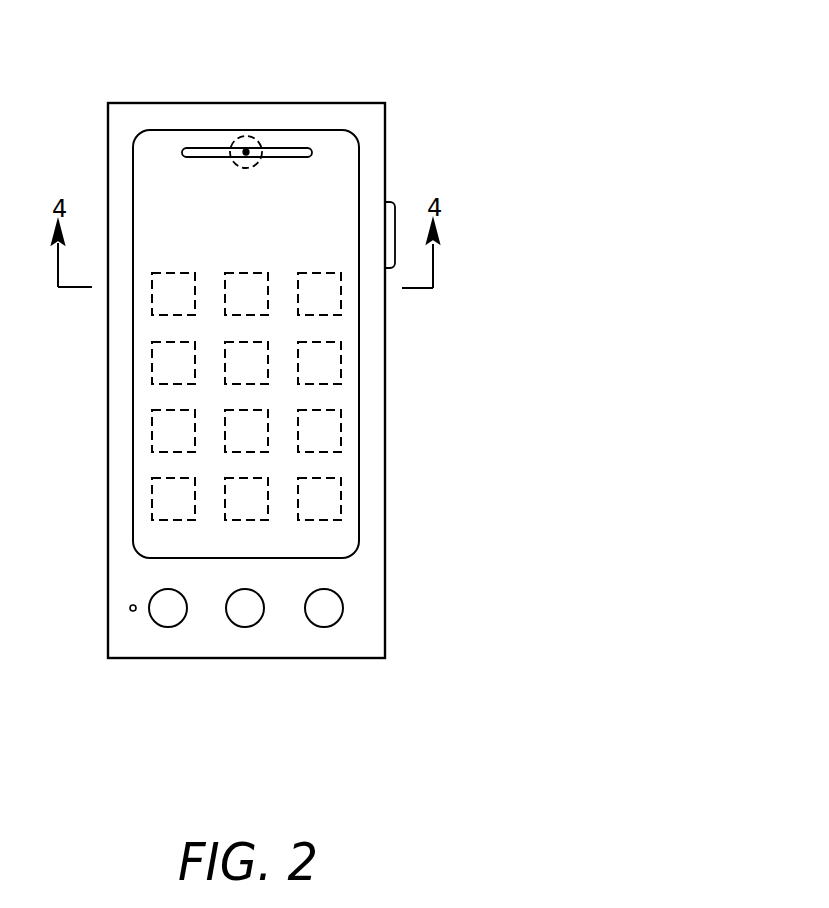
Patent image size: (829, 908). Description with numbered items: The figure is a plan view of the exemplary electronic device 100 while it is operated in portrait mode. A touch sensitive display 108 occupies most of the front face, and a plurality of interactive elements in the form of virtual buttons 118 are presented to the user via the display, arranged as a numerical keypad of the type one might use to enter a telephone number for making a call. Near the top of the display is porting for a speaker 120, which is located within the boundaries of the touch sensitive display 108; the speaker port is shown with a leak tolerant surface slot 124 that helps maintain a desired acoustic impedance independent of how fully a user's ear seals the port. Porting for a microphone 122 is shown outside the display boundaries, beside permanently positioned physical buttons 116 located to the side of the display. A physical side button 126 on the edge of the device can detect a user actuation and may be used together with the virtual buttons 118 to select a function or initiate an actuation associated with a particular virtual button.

The electronic device 100 is at (437, 82).
The touch sensitive display 108 is at (360, 150).
The physical buttons 116 is at (173, 619).
The virtual buttons 118 is at (342, 304).
The speaker 120 is at (248, 156).
The microphone 122 is at (129, 608).
The leak tolerant surface slot 124 is at (305, 158).
The side button 126 is at (393, 210).